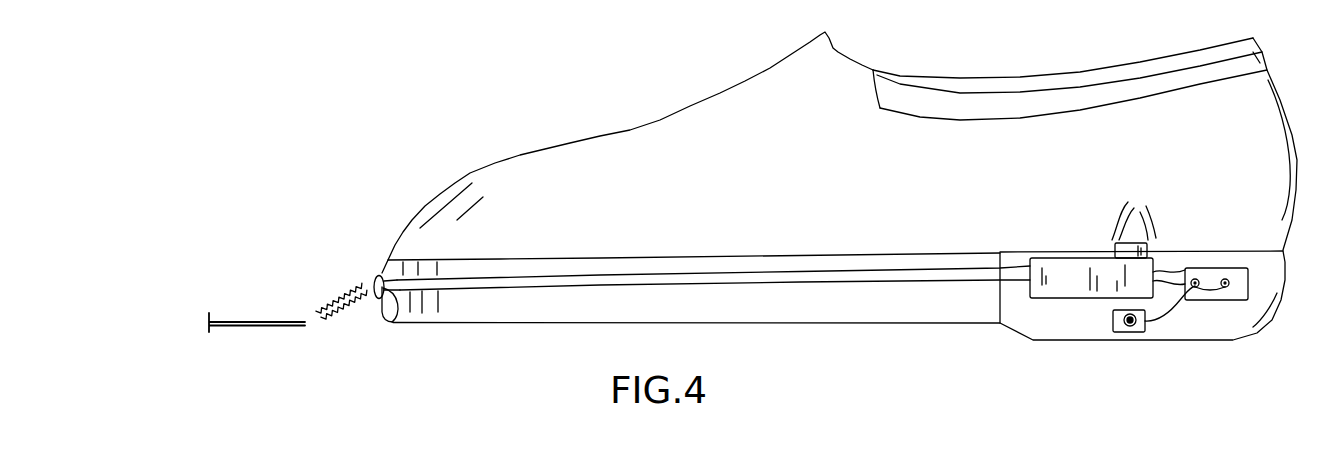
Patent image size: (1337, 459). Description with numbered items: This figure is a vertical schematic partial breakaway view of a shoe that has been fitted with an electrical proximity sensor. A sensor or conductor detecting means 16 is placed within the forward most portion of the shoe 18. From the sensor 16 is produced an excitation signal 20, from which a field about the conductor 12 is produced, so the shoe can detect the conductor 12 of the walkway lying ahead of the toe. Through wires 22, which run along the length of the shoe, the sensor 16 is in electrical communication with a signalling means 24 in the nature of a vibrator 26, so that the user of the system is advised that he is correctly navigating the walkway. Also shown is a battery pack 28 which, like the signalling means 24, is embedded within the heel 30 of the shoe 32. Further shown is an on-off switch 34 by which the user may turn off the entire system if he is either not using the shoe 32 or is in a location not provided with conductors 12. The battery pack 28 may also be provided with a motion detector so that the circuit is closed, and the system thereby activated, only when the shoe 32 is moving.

The conductor 12 is at (248, 328).
The sensor 16 is at (395, 323).
The shoe 18 is at (492, 307).
The excitation signal 20 is at (347, 293).
The wires 22 is at (838, 283).
The signalling means 24 is at (1060, 290).
The vibrator 26 is at (1162, 228).
The battery pack 28 is at (1220, 300).
The heel 30 is at (1163, 343).
The shoe 32 is at (757, 120).
The on-off switch 34 is at (1120, 340).